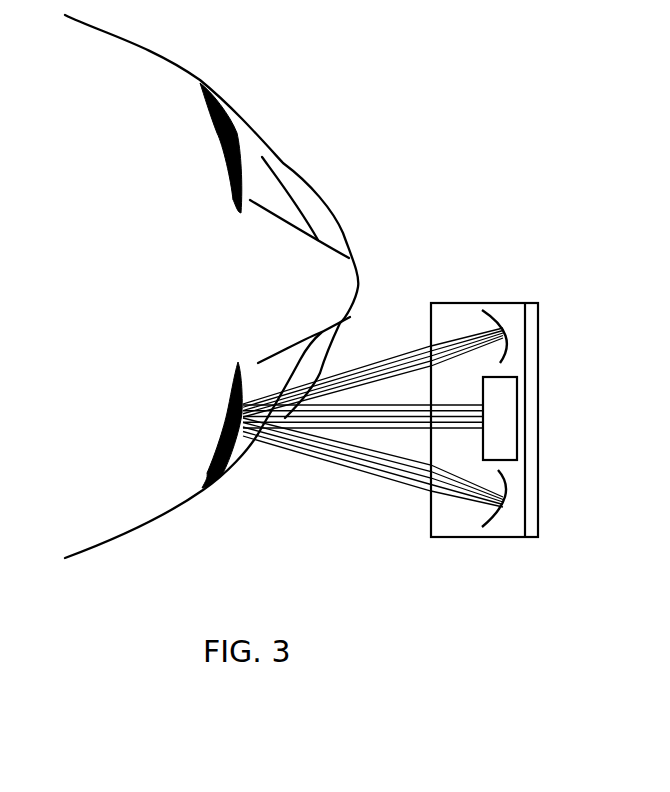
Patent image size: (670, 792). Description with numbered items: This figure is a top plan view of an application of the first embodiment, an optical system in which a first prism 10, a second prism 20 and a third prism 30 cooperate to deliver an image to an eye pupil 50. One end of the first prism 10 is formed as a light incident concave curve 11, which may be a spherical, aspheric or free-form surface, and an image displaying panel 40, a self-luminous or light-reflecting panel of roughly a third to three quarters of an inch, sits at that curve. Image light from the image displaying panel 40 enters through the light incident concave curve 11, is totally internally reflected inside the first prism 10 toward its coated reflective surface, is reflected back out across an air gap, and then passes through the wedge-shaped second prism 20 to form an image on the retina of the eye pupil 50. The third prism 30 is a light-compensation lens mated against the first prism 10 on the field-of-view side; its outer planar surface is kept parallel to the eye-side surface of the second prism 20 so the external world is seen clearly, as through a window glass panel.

The first prism 10 is at (467, 301).
The light incident concave curve 11 is at (470, 372).
The second prism 20 is at (447, 512).
The third prism 30 is at (538, 455).
The image displaying panel 40 is at (510, 420).
The eye pupil 50 is at (228, 414).